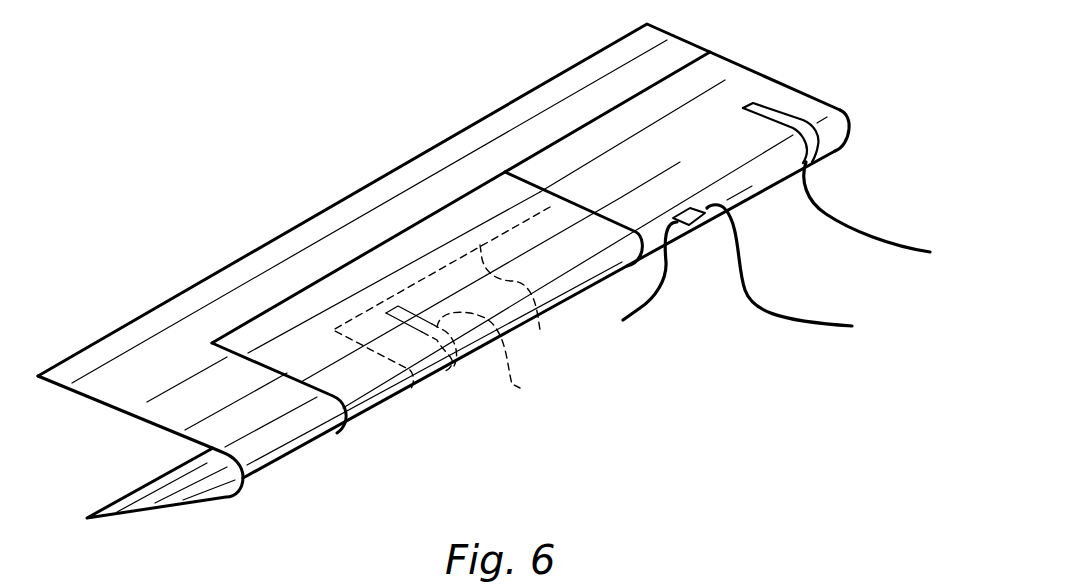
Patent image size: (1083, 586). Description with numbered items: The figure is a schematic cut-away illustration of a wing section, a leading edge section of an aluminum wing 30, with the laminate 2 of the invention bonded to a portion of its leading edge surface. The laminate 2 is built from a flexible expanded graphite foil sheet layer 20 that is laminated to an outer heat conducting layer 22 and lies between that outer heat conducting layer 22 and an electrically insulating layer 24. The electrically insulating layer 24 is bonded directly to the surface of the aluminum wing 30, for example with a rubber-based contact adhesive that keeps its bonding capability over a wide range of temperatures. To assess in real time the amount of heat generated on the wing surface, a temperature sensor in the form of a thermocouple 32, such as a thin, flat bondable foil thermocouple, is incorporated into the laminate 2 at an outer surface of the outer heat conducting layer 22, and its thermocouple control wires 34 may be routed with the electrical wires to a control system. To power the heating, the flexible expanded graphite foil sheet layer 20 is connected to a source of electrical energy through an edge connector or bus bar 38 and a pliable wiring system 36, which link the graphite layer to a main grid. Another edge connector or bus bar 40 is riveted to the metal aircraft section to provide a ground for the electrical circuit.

The laminate 2 is at (612, 370).
The flexible expanded graphite foil sheet layer 20 is at (540, 330).
The outer heat conducting layer 22 is at (732, 94).
The electrically insulating layer 24 is at (452, 227).
The aluminum wing 30 is at (262, 247).
The thermocouple 32 is at (693, 222).
The thermocouple control wires 34 is at (652, 307).
The wiring system 36 is at (866, 238).
The edge connector or bus bar 38 is at (793, 122).
The edge connector or bus bar 40 is at (512, 382).